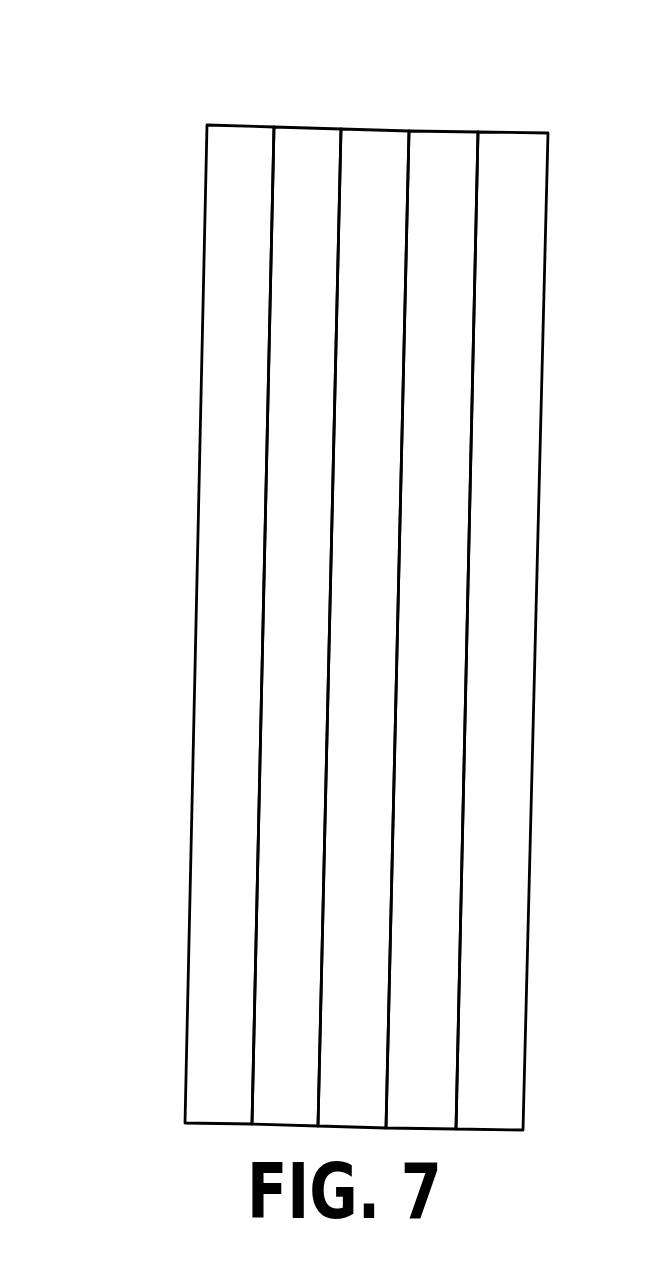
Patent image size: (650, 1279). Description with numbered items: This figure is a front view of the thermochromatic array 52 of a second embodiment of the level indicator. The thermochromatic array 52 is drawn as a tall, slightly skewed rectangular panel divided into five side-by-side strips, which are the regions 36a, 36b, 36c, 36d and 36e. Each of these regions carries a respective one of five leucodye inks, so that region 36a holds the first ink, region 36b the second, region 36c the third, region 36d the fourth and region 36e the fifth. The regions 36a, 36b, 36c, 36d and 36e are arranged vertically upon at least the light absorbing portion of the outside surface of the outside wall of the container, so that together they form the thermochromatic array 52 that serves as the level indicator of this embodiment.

The thermochromatic array 52 is at (290, 569).
The region 36a is at (232, 188).
The region 36b is at (290, 298).
The region 36c is at (365, 413).
The region 36d is at (428, 570).
The region 36e is at (495, 718).